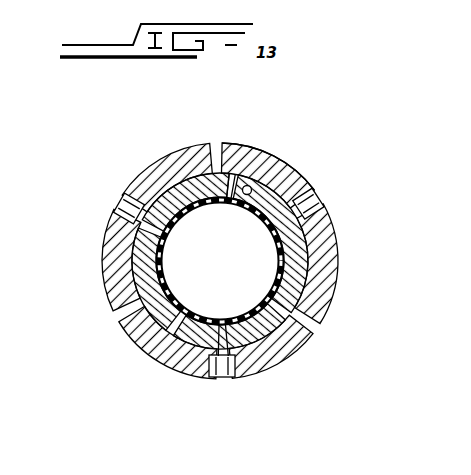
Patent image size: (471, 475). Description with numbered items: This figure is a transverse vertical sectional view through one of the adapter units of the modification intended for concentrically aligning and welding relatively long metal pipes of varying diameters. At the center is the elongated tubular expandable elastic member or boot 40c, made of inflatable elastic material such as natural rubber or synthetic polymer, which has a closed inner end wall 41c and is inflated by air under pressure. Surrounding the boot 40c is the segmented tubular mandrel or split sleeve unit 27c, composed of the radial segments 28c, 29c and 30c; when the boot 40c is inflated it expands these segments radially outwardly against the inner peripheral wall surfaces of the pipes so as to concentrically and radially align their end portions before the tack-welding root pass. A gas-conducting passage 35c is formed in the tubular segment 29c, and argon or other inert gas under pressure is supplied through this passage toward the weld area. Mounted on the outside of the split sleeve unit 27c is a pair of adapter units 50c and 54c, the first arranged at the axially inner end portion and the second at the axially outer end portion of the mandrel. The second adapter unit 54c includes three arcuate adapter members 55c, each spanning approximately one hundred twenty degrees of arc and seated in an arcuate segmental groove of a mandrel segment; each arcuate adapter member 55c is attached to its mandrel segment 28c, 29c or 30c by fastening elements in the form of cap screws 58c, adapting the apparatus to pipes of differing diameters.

The segmented tubular mandrel or split sleeve unit 27c is at (186, 352).
The radial segment 28c is at (182, 188).
The tubular segment 29c is at (300, 262).
The radial segment 30c is at (137, 250).
The gas-conducting passage 35c is at (246, 196).
The tubular expandable elastic member or boot 40c is at (186, 297).
The closed inner end wall 41c is at (277, 320).
The first segmental annular adapter unit 50c is at (218, 263).
The second adapter unit 54c is at (283, 153).
The arcuate adapter member 55c is at (248, 157).
The cap screw 58c is at (120, 200).